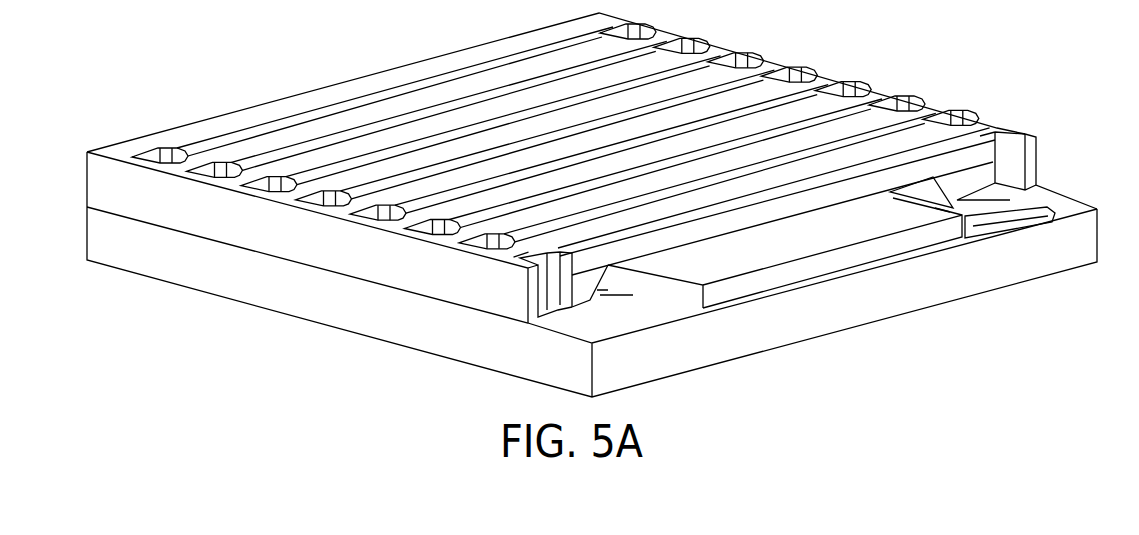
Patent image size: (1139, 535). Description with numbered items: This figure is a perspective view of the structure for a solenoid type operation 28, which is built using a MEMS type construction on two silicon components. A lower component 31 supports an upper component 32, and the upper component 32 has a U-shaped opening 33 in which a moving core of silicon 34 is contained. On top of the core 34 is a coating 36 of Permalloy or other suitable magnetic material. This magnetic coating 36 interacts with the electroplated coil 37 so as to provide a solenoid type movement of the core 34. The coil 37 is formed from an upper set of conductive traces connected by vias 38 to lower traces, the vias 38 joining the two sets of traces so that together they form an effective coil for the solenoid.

The solenoid type operation structure 28 is at (592, 212).
The lower component 31 is at (770, 352).
The upper component 32 is at (928, 104).
The U-shaped opening 33 is at (647, 289).
The moving core of silicon 34 is at (820, 263).
The Permalloy coating 36 is at (880, 228).
The electroplated coil 37 is at (803, 97).
The vias 38 is at (217, 173).